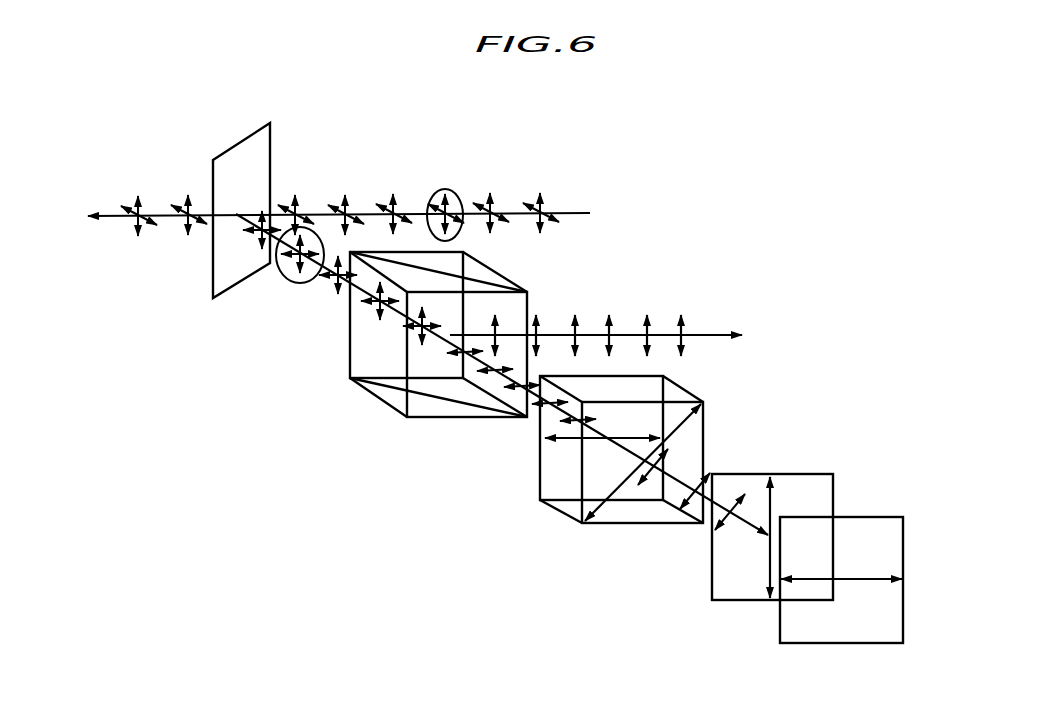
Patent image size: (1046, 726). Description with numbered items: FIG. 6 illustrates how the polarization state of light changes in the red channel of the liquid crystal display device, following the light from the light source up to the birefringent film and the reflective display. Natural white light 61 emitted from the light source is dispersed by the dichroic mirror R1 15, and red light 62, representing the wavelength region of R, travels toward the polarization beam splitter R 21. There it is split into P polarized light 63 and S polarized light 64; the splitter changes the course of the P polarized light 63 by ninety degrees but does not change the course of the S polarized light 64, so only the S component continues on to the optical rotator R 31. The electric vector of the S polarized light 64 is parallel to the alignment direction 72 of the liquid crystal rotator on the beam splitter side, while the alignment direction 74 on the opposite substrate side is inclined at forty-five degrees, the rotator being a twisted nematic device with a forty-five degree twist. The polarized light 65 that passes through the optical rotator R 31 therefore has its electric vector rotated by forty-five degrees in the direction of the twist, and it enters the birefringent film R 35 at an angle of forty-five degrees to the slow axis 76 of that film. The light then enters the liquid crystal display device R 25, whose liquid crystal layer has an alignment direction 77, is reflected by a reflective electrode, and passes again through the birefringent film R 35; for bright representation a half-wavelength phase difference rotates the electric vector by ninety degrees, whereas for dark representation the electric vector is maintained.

The dichroic mirror R1 15 is at (222, 215).
The natural white light 61 is at (445, 188).
The red light 62 is at (290, 283).
The P polarized light 63 is at (575, 318).
The polarization beam splitter R 21 is at (428, 334).
The S polarized light 64 is at (480, 368).
The alignment direction 72 is at (572, 438).
The alignment direction 74 is at (605, 505).
The polarized light 65 is at (667, 457).
The optical rotator R 31 is at (616, 458).
The birefringent film R 35 is at (751, 544).
The slow axis 76 is at (770, 480).
The liquid crystal display device R 25 is at (823, 588).
The alignment direction 77 is at (853, 580).